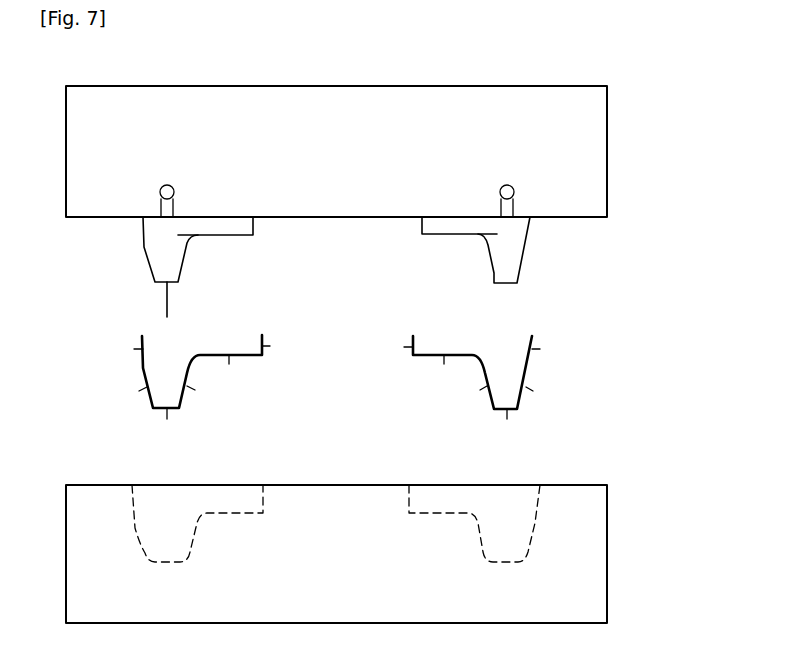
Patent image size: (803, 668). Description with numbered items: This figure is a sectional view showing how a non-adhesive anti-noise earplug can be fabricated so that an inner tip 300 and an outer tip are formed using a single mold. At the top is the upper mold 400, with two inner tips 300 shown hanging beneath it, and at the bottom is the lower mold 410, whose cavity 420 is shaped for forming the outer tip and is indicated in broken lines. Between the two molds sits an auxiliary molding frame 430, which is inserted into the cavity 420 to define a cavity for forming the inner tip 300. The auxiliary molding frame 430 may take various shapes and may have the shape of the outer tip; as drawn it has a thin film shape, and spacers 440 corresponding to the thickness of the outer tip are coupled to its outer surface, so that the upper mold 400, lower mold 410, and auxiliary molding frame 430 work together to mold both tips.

The upper mold 400 is at (593, 140).
The inner tip 300 is at (517, 249).
The auxiliary molding frame 430 is at (530, 368).
The spacers 440 is at (507, 415).
The lower mold 410 is at (590, 578).
The cavity 420 is at (542, 512).